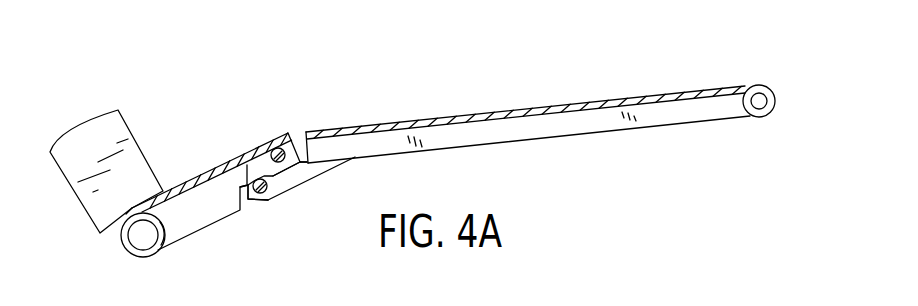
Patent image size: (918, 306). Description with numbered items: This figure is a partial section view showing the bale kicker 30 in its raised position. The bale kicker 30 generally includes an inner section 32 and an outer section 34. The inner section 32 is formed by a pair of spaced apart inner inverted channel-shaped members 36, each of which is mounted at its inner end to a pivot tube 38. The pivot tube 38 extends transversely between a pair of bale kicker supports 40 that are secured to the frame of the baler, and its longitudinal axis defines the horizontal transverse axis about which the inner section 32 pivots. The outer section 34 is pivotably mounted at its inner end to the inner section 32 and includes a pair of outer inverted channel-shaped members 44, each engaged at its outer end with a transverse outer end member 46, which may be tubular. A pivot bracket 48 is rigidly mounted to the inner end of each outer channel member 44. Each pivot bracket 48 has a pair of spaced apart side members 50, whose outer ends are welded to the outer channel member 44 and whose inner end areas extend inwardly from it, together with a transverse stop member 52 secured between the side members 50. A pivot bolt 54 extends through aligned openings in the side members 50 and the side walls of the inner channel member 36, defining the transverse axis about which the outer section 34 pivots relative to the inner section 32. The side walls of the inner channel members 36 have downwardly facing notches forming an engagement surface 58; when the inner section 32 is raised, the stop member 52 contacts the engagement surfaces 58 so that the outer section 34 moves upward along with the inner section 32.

The bale kicker 30 is at (304, 64).
The inner section 32 is at (227, 126).
The outer section 34 is at (519, 86).
The inner inverted channel-shaped member 36 is at (200, 164).
The pivot tube 38 is at (130, 257).
The bale kicker support 40 is at (69, 160).
The outer inverted channel-shaped member 44 is at (556, 100).
The transverse outer end member 46 is at (754, 87).
The pivot bracket 48 is at (316, 188).
The side member 50 is at (336, 167).
The stop member 52 is at (274, 194).
The pivot bolt 54 is at (298, 140).
The engagement surface 58 is at (253, 203).